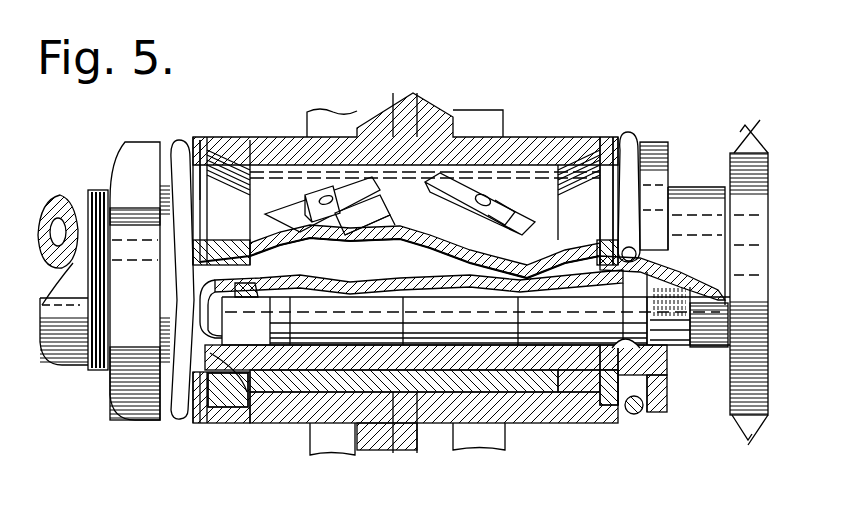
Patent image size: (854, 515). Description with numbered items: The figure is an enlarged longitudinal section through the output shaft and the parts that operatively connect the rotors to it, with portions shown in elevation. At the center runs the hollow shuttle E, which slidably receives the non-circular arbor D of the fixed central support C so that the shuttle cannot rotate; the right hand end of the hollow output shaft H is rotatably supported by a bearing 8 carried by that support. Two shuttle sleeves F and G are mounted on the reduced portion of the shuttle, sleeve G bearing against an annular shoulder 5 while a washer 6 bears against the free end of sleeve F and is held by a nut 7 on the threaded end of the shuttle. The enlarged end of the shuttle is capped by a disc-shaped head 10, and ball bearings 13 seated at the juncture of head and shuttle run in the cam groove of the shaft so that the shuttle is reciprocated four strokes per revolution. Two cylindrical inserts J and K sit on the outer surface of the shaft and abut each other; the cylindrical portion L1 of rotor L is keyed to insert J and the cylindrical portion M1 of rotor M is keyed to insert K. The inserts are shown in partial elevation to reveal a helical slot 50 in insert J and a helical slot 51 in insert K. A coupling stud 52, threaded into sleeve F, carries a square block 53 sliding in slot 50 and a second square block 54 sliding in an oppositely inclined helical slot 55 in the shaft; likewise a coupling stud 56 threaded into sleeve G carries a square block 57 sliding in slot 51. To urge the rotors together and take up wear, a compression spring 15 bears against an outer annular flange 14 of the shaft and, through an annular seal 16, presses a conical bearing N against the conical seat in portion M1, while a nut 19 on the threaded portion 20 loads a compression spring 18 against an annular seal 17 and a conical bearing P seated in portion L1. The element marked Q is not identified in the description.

The annular shoulder 5 is at (518, 311).
The washer 6 is at (278, 316).
The nut 7 is at (258, 340).
The bearing 8 is at (702, 313).
The disc-shaped head 10 is at (668, 288).
The ball bearings 13 is at (634, 346).
The outer annular flange 14 is at (665, 405).
The compression spring 15 is at (632, 150).
The annular seal 16 is at (610, 148).
The annular seal 17 is at (200, 155).
The compression spring 18 is at (182, 420).
The nut 19 is at (130, 402).
The threaded portion 20 is at (100, 200).
The helical slot 50 is at (300, 208).
The helical slot 51 is at (522, 218).
The coupling stud 52 is at (328, 197).
The square block 53 is at (310, 214).
The second square block 54 is at (338, 228).
The helical slot 55 is at (380, 232).
The coupling stud 56 is at (483, 195).
The square block 57 is at (500, 205).
The central support C is at (768, 384).
The arbor D is at (680, 292).
The hollow shuttle E is at (565, 311).
The shuttle sleeve F is at (360, 311).
The shuttle sleeve G is at (442, 311).
The hollow output shaft H is at (692, 192).
The cylindrical insert J is at (285, 178).
The cylindrical insert K is at (512, 175).
The rotor L is at (333, 440).
The cylindrical portion L1 is at (262, 150).
The rotor M is at (485, 440).
The cylindrical portion M1 is at (540, 412).
The conical bearing N is at (600, 395).
The conical bearing P is at (222, 395).
The clamp bolt Q is at (412, 448).